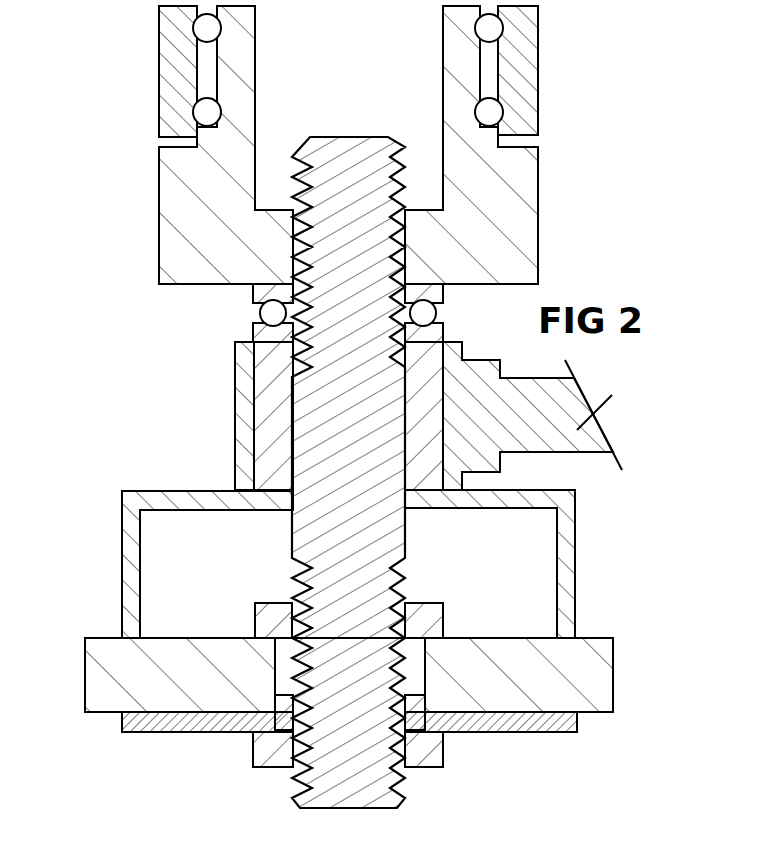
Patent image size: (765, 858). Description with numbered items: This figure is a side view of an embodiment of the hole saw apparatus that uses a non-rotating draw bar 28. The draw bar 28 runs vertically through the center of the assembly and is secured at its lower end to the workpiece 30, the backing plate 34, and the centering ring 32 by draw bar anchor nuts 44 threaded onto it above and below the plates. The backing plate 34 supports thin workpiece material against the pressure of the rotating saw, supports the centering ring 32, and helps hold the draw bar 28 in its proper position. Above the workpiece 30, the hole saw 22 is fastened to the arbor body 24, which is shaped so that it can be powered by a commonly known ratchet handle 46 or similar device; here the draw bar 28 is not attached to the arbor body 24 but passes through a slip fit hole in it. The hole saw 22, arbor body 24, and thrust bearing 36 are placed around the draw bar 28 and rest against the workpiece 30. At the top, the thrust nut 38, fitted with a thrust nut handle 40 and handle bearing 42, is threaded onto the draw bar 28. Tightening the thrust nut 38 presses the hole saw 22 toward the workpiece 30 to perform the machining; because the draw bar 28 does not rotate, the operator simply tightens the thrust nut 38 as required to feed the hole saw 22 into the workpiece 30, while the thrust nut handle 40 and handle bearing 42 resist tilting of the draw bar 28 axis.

The hole saw 22 is at (132, 527).
The arbor body 24 is at (272, 425).
The draw bar 28 is at (352, 128).
The workpiece 30 is at (545, 657).
The centering ring 32 is at (417, 707).
The backing plate 34 is at (555, 718).
The thrust bearing 36 is at (253, 293).
The thrust nut 38 is at (533, 210).
The thrust nut handle 40 is at (180, 90).
The handle bearing 42 is at (492, 30).
The draw bar anchor nuts 44 is at (262, 623).
The ratchet handle 46 is at (563, 448).